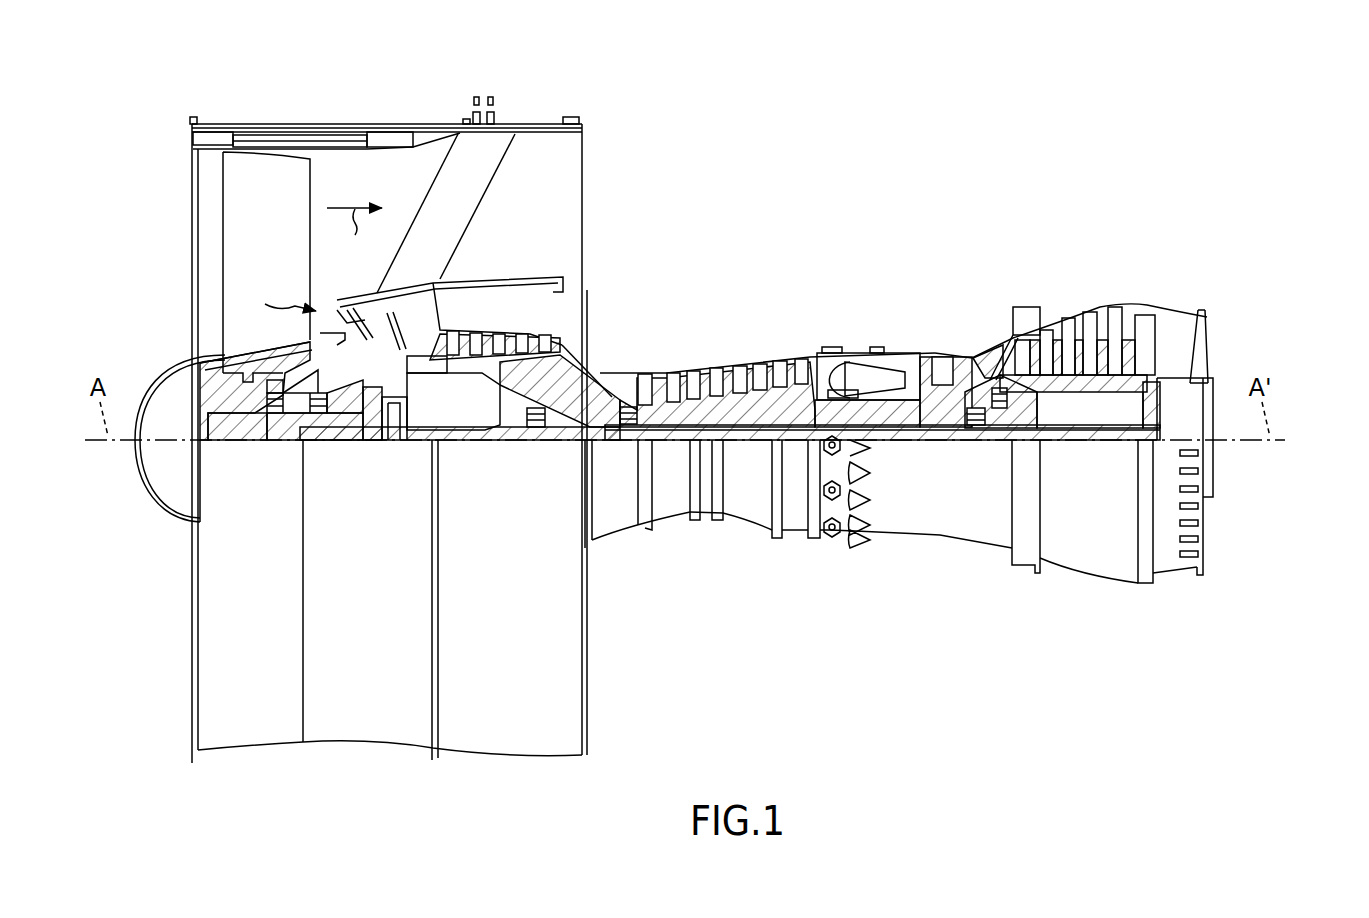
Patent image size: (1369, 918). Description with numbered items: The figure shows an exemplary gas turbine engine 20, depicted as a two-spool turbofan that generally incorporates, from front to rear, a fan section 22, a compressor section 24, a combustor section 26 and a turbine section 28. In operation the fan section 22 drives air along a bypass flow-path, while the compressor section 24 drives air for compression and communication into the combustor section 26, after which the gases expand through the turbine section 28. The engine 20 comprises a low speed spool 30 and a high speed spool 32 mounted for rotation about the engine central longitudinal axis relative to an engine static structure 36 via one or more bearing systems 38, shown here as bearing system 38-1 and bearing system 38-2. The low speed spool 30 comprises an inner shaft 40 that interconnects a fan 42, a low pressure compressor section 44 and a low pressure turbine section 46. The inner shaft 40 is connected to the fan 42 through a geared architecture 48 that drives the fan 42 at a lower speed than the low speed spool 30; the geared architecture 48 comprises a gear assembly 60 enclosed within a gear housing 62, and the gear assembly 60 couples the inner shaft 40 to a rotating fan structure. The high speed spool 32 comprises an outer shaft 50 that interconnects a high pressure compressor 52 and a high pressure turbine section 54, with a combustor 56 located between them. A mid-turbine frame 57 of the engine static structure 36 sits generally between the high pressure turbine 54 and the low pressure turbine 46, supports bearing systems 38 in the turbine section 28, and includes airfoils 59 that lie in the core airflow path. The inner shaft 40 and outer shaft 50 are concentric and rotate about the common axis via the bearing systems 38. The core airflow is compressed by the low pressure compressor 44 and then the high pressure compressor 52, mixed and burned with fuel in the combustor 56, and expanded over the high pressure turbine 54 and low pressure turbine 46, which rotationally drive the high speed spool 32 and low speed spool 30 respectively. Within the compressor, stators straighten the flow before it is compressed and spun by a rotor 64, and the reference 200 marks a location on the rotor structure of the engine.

The gas turbine engine 20 is at (930, 162).
The fan section 22 is at (432, 104).
The compressor section 24 is at (440, 237).
The combustor section 26 is at (817, 237).
The turbine section 28 is at (1143, 237).
The low speed spool 30 is at (755, 468).
The high speed spool 32 is at (792, 408).
The engine static structure 36 is at (170, 754).
The bearing system 38 is at (985, 440).
The bearing system 38-1 is at (275, 415).
The bearing system 38-2 is at (533, 440).
The inner shaft 40 is at (603, 440).
The fan 42 is at (223, 337).
The low pressure compressor section 44 is at (513, 336).
The low pressure turbine section 46 is at (1077, 322).
The geared architecture 48 is at (400, 458).
The outer shaft 50 is at (875, 430).
The high pressure compressor 52 is at (750, 370).
The high pressure turbine section 54 is at (921, 357).
The combustor 56 is at (878, 377).
The mid-turbine frame 57 is at (996, 343).
The airfoils 59 is at (1003, 357).
The gear assembly 60 is at (415, 412).
The gear housing 62 is at (398, 381).
The rotor 64 is at (555, 346).
The rotor assembly 200 is at (613, 412).